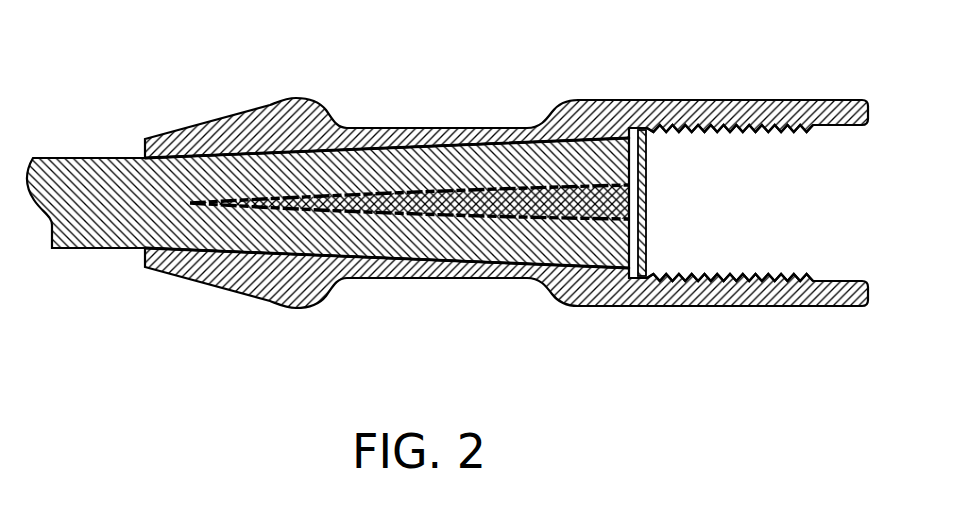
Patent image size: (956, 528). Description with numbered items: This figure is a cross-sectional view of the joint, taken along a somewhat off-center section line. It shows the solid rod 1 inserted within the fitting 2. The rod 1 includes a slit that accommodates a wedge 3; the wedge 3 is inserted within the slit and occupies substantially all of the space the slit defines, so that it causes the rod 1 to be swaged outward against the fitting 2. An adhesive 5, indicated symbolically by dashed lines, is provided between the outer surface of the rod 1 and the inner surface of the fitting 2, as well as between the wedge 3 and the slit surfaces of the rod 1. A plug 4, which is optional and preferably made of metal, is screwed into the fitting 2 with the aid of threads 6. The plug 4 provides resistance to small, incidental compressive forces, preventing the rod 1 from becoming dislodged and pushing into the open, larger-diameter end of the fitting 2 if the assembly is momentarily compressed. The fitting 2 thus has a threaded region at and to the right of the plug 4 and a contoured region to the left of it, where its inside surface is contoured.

The solid rod 1 is at (104, 178).
The fitting 2 is at (263, 127).
The wedge 3 is at (552, 194).
The plug 4 is at (647, 174).
The adhesive 5 is at (430, 193).
The threads 6 is at (777, 128).